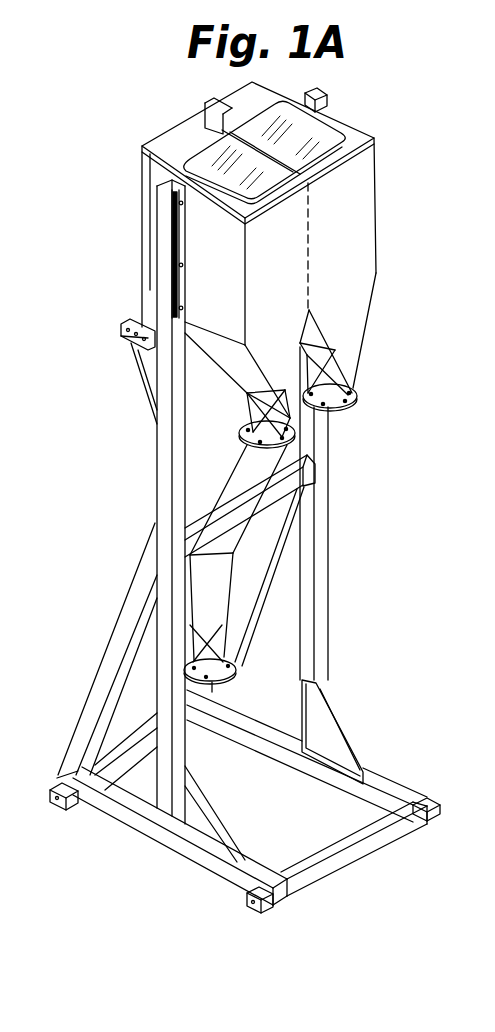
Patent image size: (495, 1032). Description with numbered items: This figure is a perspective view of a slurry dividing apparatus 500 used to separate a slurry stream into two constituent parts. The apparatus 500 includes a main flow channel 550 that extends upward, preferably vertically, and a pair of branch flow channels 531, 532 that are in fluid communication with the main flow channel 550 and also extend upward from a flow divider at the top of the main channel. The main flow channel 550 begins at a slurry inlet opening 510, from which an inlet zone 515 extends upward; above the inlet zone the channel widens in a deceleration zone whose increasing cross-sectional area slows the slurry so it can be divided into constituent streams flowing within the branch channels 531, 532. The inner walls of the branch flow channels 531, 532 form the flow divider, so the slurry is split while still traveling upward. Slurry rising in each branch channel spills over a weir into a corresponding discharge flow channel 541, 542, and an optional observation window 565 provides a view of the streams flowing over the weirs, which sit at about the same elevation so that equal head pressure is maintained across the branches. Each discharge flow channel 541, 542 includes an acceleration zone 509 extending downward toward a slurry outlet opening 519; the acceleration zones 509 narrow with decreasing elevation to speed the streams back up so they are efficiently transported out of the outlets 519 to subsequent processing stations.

The slurry dividing apparatus 500 is at (405, 872).
The acceleration zone 509 is at (282, 363).
The slurry inlet opening 510 is at (215, 697).
The inlet zone 515 is at (226, 640).
The slurry outlet opening 519 is at (277, 457).
The branch flow channel 531 is at (205, 116).
The branch flow channel 532 is at (142, 188).
The discharge flow channel 541 is at (349, 279).
The discharge flow channel 542 is at (285, 257).
The main flow channel 550 is at (220, 428).
The observation window 565 is at (292, 136).